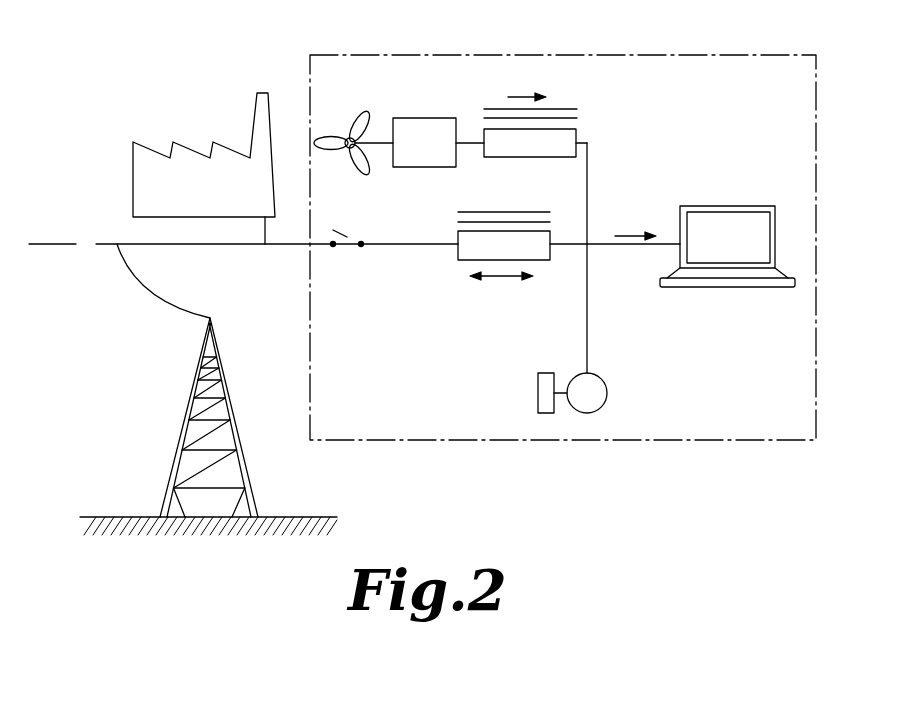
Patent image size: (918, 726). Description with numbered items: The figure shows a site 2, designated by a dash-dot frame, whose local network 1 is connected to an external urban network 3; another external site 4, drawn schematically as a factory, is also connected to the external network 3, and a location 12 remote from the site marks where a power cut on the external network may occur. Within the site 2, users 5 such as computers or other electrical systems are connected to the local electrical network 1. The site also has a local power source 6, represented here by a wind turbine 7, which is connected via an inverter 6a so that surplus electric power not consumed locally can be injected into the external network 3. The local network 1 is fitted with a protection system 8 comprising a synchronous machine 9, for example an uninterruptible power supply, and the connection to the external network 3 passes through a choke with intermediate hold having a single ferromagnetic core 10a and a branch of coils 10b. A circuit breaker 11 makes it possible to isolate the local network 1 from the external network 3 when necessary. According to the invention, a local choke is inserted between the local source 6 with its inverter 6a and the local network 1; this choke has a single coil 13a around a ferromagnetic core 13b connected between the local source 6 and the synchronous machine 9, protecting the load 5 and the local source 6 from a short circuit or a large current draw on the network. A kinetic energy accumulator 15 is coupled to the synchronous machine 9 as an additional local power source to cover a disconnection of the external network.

The local network 1 is at (588, 182).
The site 2 is at (742, 55).
The external urban network 3 is at (201, 244).
The external site 4 is at (200, 160).
The users 5 is at (717, 257).
The local power source 6 is at (403, 94).
The inverter 6a is at (427, 118).
The wind turbine 7 is at (357, 128).
The protection system 8 is at (422, 313).
The synchronous machine 9 is at (597, 400).
The ferromagnetic core 10a is at (503, 212).
The coil branch 10b is at (462, 250).
The circuit breaker 11 is at (350, 238).
The remote location 12 is at (86, 243).
The coil 13a is at (555, 118).
The ferromagnetic core 13b is at (570, 138).
The kinetic energy accumulator 15 is at (545, 383).